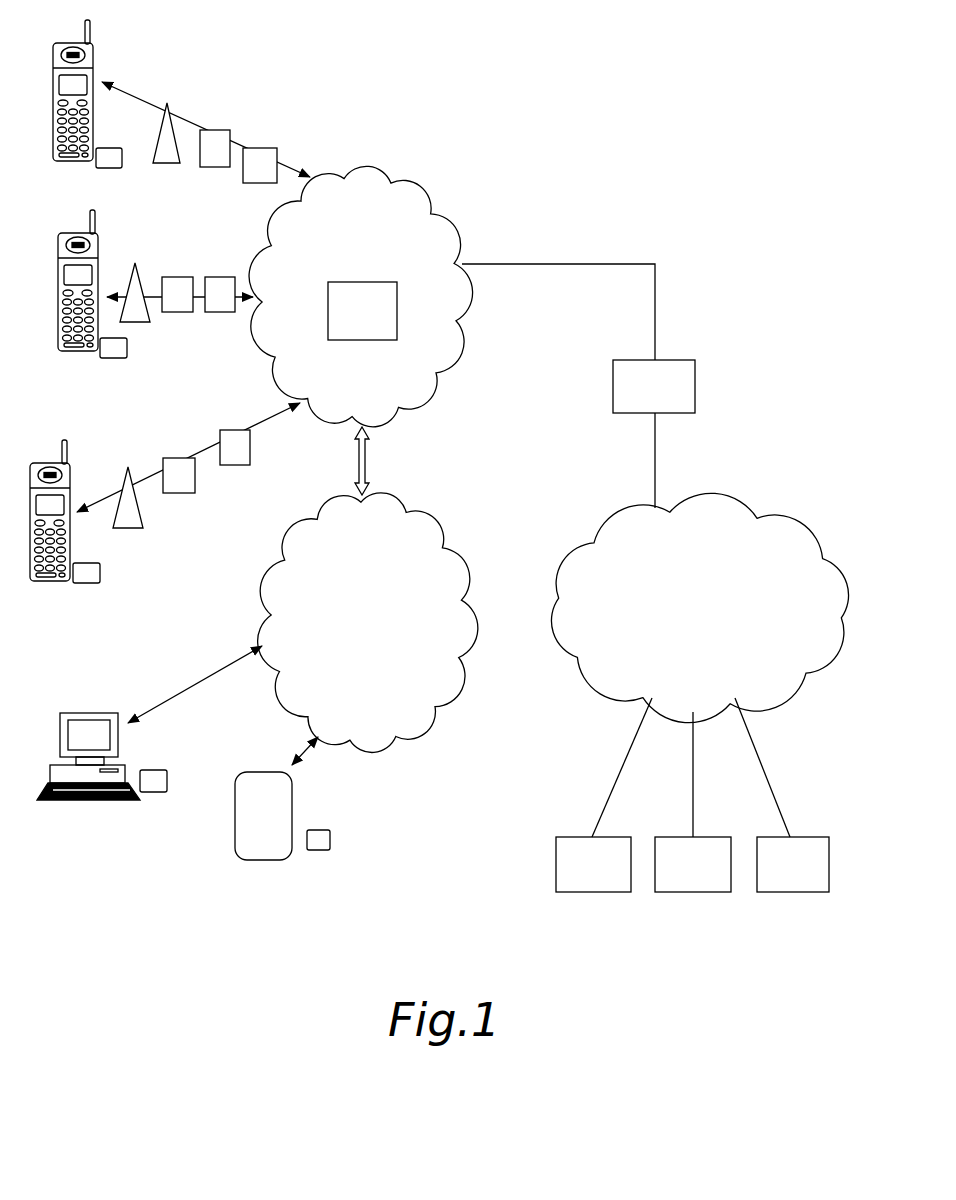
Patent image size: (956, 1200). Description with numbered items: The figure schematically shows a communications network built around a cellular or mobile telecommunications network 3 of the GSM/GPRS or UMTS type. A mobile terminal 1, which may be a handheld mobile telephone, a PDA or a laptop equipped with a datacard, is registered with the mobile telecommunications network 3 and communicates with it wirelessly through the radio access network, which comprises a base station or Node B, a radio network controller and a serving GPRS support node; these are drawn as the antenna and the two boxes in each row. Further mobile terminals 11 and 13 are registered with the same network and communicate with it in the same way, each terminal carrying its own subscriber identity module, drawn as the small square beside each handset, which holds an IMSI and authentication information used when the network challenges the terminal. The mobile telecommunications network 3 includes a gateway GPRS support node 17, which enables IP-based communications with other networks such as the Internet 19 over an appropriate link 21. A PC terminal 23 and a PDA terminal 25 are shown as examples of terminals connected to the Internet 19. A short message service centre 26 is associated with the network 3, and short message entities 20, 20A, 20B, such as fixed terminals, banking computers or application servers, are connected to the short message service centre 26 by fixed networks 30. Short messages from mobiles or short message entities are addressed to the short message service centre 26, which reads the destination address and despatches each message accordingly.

The mobile terminal 1 is at (92, 53).
The mobile telecommunications network 3 is at (363, 182).
The mobile terminal 11 is at (57, 270).
The mobile terminal 13 is at (30, 487).
The gateway GPRS support node (GGSN) 17 is at (358, 293).
The Internet 19 is at (456, 568).
The short message entity (SME) 20 is at (589, 892).
The short message entity (SME) 20A is at (686, 892).
The short message entity (SME) 20B is at (787, 892).
The link 21 is at (368, 460).
The PC terminal 23 is at (52, 767).
The PDA terminal 25 is at (255, 860).
The short message service centre (SMSC) 26 is at (613, 378).
The fixed networks 30 is at (677, 619).